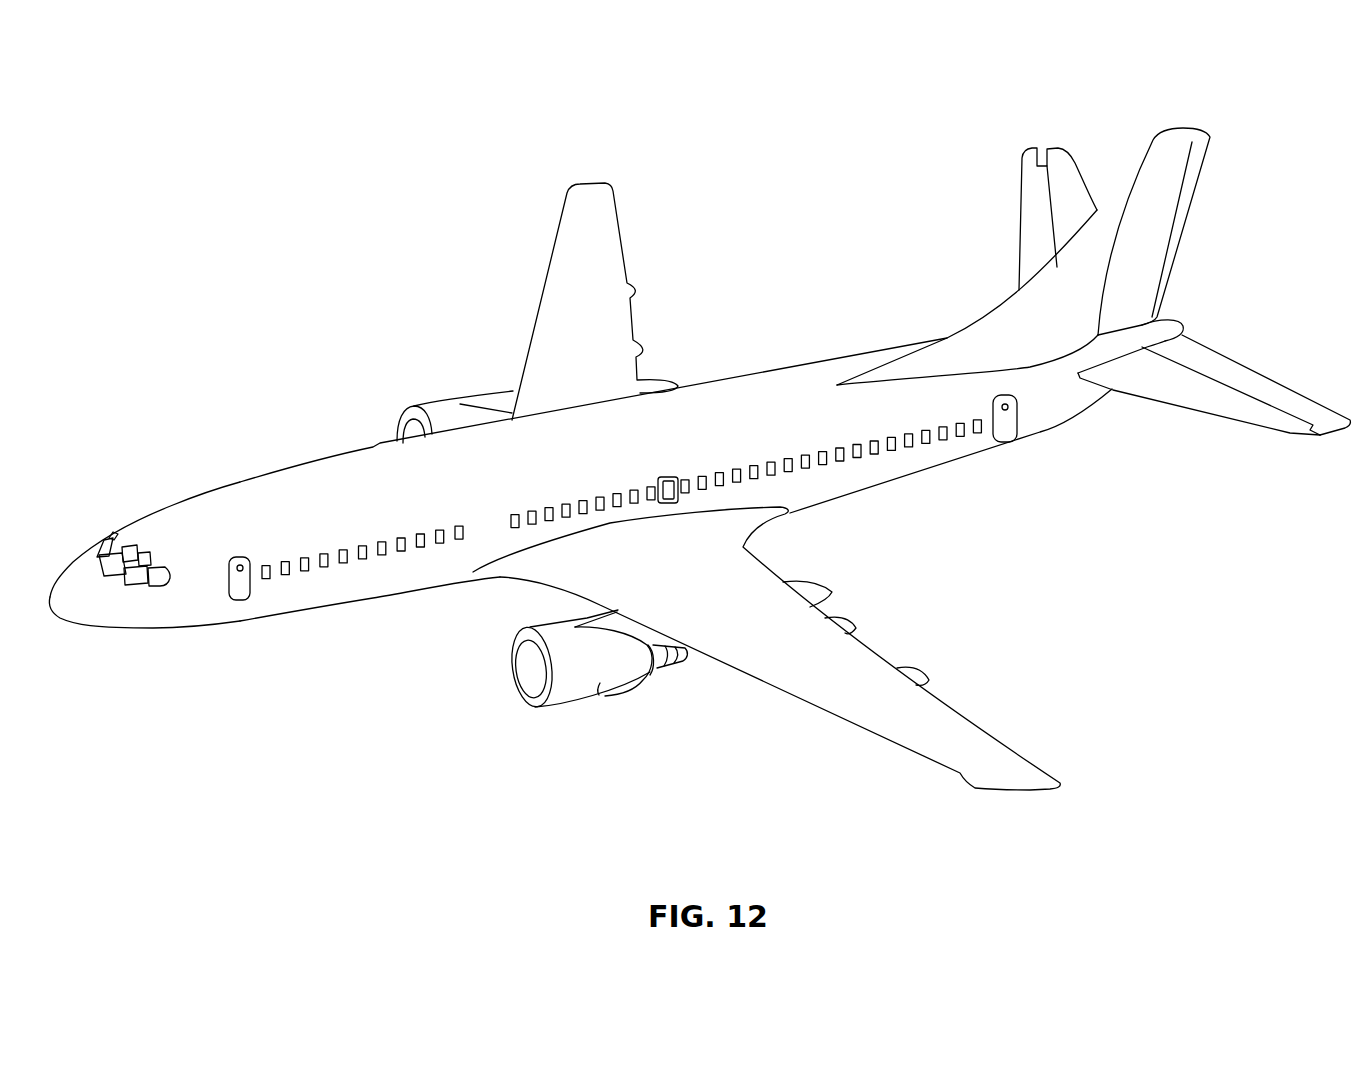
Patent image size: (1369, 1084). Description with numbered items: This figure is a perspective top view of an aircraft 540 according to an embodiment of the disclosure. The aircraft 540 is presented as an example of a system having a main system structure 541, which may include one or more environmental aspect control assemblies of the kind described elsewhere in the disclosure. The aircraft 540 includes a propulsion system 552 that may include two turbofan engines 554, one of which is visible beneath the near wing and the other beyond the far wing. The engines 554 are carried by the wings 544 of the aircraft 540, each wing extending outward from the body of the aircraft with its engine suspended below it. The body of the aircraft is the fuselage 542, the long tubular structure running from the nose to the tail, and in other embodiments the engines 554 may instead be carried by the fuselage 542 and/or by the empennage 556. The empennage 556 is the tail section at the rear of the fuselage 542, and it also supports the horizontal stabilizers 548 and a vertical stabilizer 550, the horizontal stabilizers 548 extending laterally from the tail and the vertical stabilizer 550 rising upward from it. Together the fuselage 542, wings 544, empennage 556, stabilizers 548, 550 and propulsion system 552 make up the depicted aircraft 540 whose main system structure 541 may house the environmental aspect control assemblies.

The aircraft 540 is at (221, 277).
The main system structure 541 is at (221, 448).
The fuselage 542 is at (290, 608).
The wings 544 is at (590, 192).
The horizontal stabilizers 548 is at (1043, 153).
The vertical stabilizer 550 is at (1197, 137).
The propulsion system 552 is at (442, 780).
The turbofan engines 554 is at (438, 407).
The empennage 556 is at (866, 326).